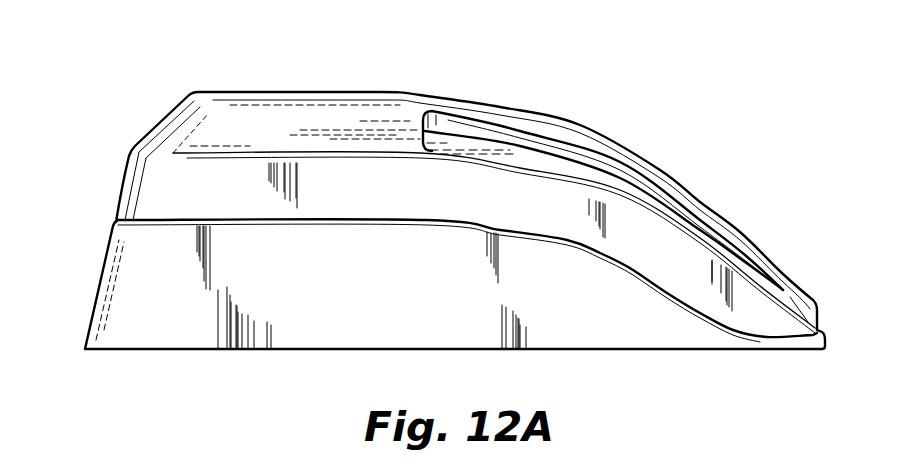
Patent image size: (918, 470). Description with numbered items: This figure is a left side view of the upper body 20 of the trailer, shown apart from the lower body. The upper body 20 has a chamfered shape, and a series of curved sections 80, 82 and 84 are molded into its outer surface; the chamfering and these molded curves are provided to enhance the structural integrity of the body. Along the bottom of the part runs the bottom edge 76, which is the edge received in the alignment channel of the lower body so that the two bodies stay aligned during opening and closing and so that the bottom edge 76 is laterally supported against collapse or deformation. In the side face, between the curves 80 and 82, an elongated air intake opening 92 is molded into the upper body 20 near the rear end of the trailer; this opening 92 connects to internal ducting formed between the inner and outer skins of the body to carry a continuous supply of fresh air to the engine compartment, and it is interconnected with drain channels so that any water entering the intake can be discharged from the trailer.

The upper body 20 is at (308, 38).
The bottom edge 76 is at (251, 348).
The curved section 80 is at (238, 103).
The curved section 82 is at (170, 153).
The curved section 84 is at (143, 220).
The air intake opening 92 is at (540, 165).